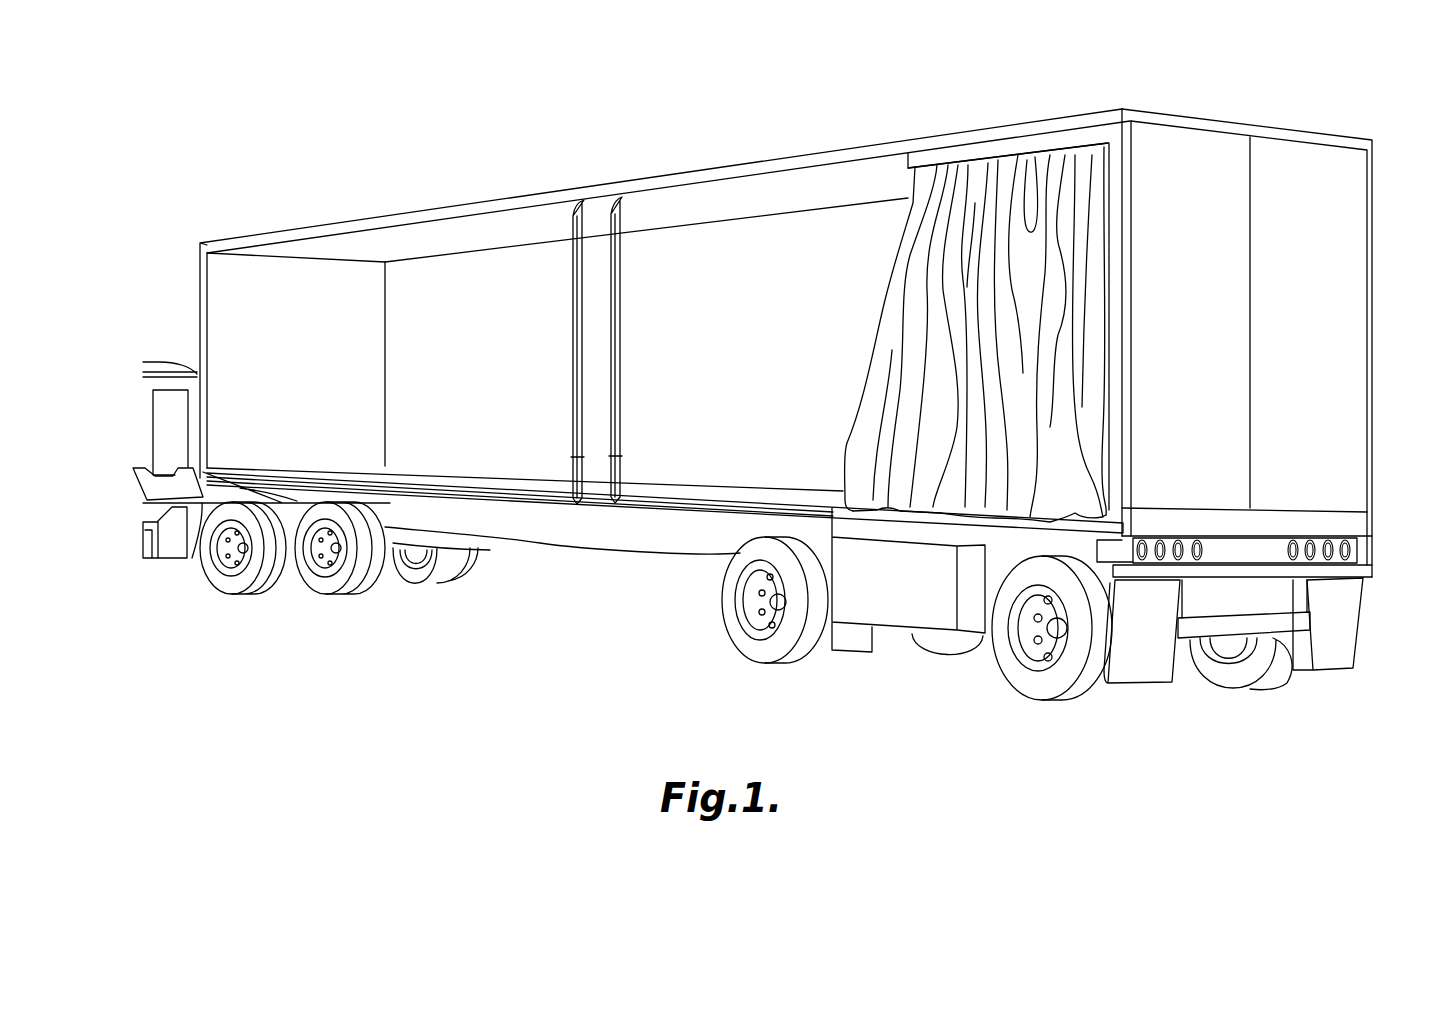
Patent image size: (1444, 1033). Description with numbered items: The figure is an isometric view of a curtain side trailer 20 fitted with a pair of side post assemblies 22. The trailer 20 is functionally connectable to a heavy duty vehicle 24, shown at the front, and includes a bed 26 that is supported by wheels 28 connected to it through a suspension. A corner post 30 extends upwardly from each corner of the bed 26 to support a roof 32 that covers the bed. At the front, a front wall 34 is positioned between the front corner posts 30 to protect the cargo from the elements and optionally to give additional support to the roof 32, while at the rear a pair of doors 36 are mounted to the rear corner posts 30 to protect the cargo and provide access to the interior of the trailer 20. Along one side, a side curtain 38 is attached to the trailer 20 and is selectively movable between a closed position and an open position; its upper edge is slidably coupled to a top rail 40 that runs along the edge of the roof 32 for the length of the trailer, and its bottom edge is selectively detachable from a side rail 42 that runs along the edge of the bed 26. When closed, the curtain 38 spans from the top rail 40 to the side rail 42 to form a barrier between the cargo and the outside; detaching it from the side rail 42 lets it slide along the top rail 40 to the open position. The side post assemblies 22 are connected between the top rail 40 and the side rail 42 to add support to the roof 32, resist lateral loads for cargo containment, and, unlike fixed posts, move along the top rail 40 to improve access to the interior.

The curtain side trailer 20 is at (386, 151).
The side post assemblies 22 is at (577, 216).
The heavy duty vehicle 24 is at (161, 367).
The bed 26 is at (553, 483).
The wheels 28 is at (740, 643).
The corner post 30 is at (205, 265).
The roof 32 is at (883, 180).
The front wall 34 is at (262, 300).
The doors 36 is at (1212, 155).
The side curtain 38 is at (1013, 198).
The top rail 40 is at (782, 162).
The side rail 42 is at (633, 508).